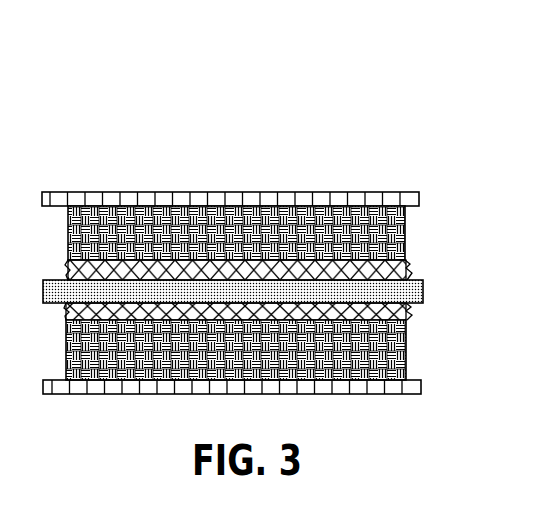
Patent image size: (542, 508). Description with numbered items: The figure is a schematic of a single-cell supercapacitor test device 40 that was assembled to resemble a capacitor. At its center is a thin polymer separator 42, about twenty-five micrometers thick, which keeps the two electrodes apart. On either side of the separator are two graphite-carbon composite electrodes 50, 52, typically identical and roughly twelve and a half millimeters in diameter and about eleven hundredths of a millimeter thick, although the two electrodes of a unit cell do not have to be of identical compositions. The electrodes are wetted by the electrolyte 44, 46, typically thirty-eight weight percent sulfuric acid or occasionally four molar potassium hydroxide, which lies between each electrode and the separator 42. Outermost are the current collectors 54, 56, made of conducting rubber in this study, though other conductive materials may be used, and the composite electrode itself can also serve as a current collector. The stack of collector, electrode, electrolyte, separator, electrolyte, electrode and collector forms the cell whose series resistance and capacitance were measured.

The composite panel assembly 40 is at (213, 147).
The polymer separator 42 is at (417, 290).
The electrolyte 44 is at (404, 265).
The electrolyte 46 is at (407, 312).
The graphite-carbon composite electrode 50 is at (392, 242).
The graphite-carbon composite electrode 52 is at (390, 347).
The current collector 54 is at (368, 200).
The current collector 56 is at (380, 394).